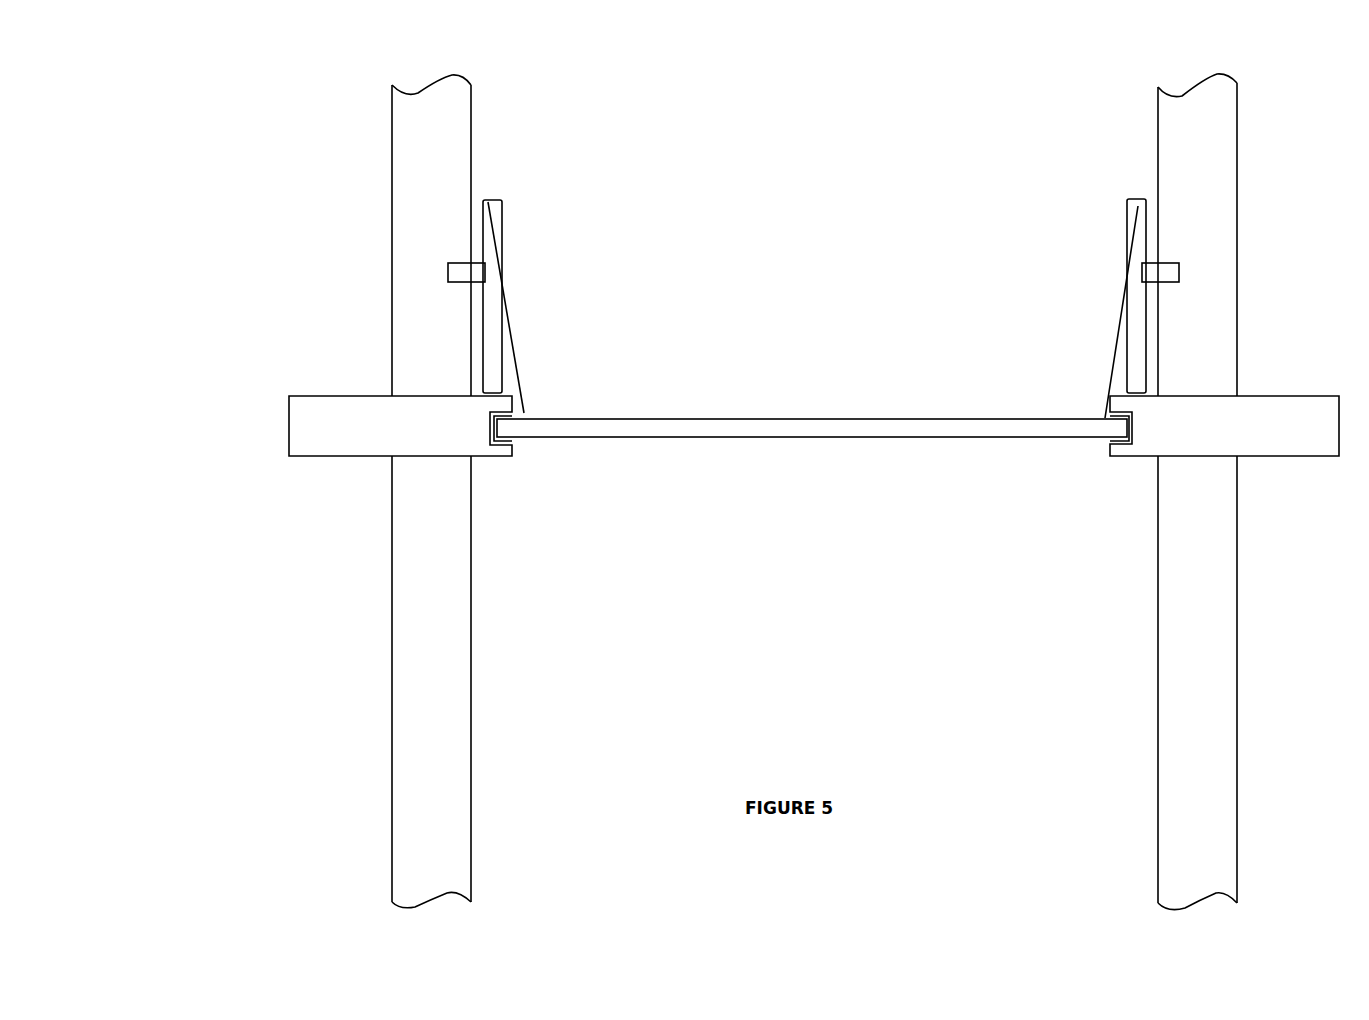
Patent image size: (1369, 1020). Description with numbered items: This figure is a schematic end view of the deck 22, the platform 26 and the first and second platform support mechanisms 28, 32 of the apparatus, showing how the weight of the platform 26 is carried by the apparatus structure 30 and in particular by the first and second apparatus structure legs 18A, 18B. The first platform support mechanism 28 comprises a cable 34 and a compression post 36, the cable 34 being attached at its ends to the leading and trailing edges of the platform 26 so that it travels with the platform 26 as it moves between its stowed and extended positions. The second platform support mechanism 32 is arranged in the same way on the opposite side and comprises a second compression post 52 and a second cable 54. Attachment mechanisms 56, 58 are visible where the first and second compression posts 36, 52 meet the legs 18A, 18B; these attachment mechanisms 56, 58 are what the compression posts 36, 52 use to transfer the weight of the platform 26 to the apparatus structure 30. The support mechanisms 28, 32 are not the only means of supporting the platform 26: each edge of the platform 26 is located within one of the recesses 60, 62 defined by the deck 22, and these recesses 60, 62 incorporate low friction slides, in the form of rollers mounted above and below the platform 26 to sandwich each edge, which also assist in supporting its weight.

The apparatus structure 30 is at (318, 79).
The first apparatus structure leg 18A is at (1225, 160).
The second apparatus structure leg 18B is at (457, 158).
The deck 22 is at (1280, 410).
The platform 26 is at (912, 418).
The first platform support mechanism 28 is at (1103, 217).
The second platform support mechanism 32 is at (525, 237).
The cable 34 is at (1105, 363).
The compression post 36 is at (1132, 287).
The second compression post 52 is at (488, 323).
The second cable 54 is at (528, 373).
The attachment mechanism 56 is at (1165, 275).
The attachment mechanism 58 is at (462, 275).
The recess 60 is at (510, 447).
The recess 62 is at (1114, 447).